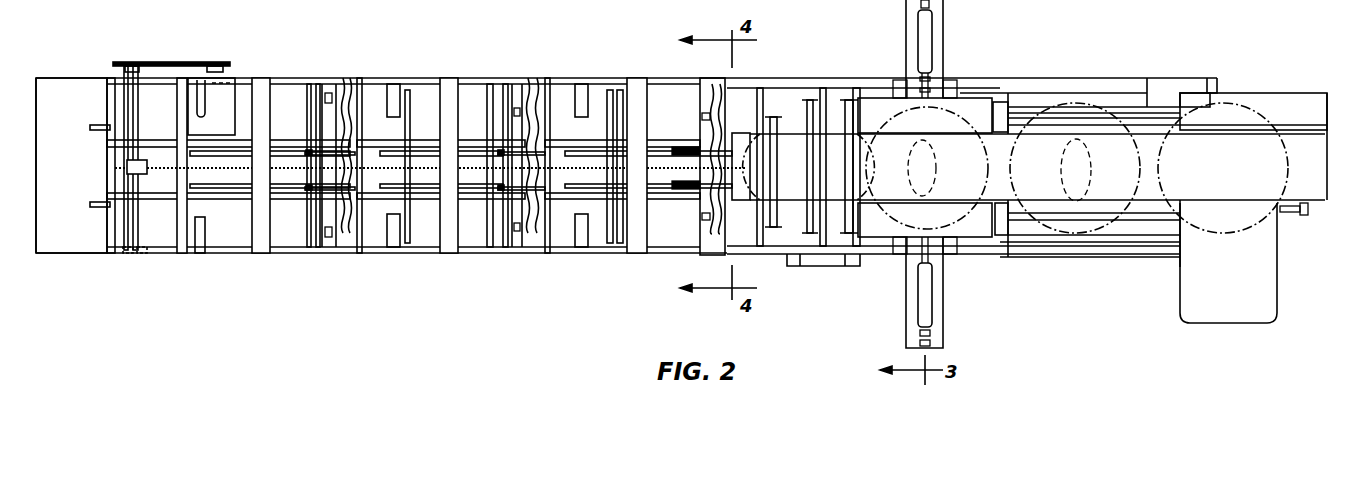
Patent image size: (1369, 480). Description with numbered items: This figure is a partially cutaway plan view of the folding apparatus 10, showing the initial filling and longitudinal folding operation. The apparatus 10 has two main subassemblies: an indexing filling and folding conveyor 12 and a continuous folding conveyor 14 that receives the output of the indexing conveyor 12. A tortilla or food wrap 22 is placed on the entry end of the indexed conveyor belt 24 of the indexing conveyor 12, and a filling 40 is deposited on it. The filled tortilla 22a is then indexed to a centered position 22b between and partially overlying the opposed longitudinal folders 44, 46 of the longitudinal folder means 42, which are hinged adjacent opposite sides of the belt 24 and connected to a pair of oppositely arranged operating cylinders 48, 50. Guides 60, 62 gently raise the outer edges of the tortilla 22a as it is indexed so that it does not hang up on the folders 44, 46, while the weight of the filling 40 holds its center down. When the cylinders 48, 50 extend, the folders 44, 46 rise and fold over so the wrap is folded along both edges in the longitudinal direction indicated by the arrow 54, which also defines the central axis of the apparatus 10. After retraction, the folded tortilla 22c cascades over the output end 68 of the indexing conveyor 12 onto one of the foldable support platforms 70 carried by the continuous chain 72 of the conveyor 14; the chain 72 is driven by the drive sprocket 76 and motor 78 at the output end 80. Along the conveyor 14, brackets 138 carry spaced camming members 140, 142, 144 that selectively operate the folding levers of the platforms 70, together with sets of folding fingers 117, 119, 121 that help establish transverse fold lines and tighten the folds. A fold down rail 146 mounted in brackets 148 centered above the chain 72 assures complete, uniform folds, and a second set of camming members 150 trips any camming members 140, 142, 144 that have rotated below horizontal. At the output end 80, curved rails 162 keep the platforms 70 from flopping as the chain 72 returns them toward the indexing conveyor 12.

The folding apparatus 10 is at (1253, 362).
The indexing filling and folding conveyor 12 is at (1325, 92).
The continuous folding conveyor 14 is at (800, 74).
The tortilla or food wrap 22 is at (1300, 162).
The filled tortilla 22a is at (1130, 173).
The centered position 22b is at (975, 175).
The folded tortilla 22c is at (860, 172).
The indexed conveyor belt 24 is at (1298, 210).
The filling 40 is at (945, 179).
The longitudinal folder means 42 is at (1003, 97).
The longitudinal folder 44 is at (894, 95).
The longitudinal folder 46 is at (958, 243).
The operating cylinder 48 is at (930, 43).
The operating cylinder 50 is at (937, 297).
The arrow indicating longitudinal direction 54 is at (1327, 183).
The guide 60 is at (1145, 80).
The guide 62 is at (1140, 224).
The output end of indexing conveyor 68 is at (852, 150).
The foldable support platform 70 is at (744, 130).
The continuous chain 72 is at (675, 150).
The drive sprocket 76 is at (146, 165).
The motor 78 is at (231, 119).
The output end of continuous conveyor 80 is at (107, 105).
The folding fingers 117 is at (700, 118).
The folding fingers 119 is at (503, 136).
The folding fingers 121 is at (313, 128).
The bracket 138 is at (345, 254).
The camming members 140 is at (705, 84).
The camming members 142 is at (518, 108).
The camming members 144 is at (328, 92).
The fold down rail 146 is at (649, 192).
The bracket 148 is at (277, 242).
The second set of camming members 150 is at (193, 62).
The curved rails 162 is at (90, 128).